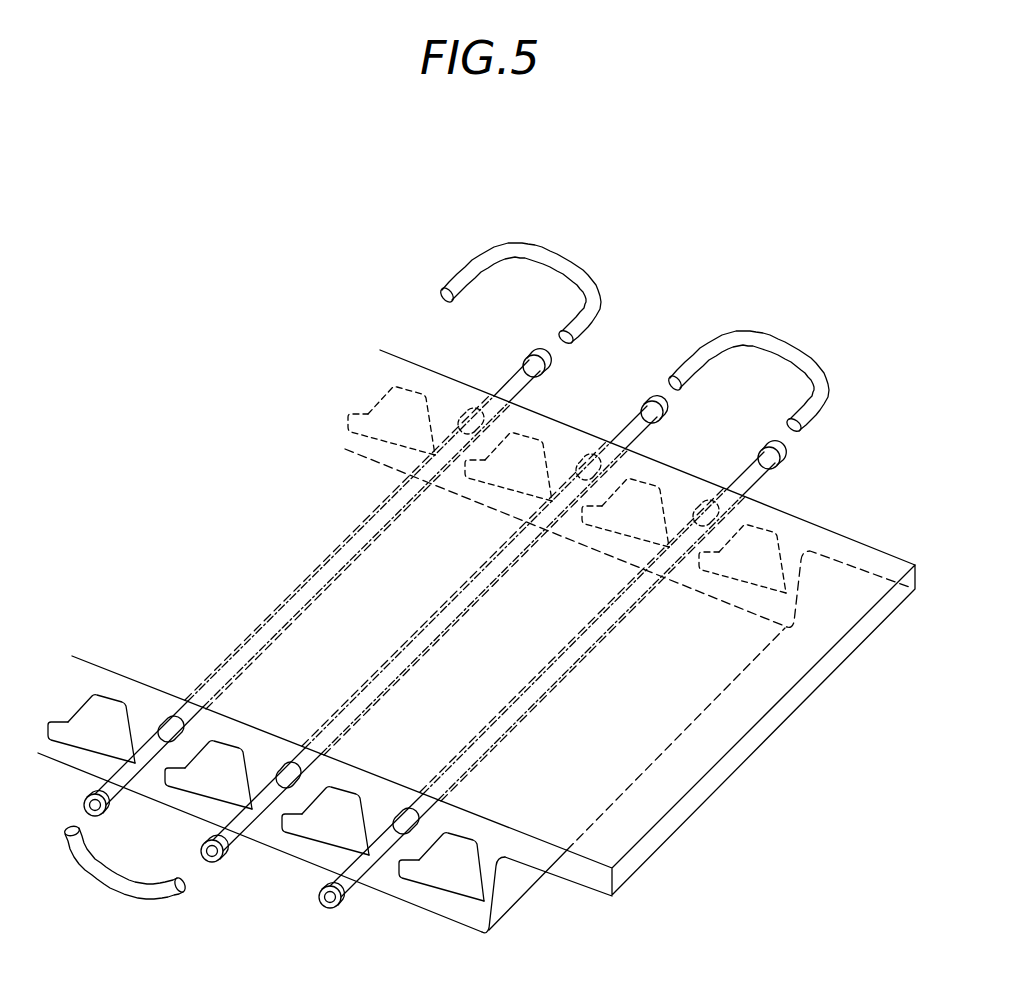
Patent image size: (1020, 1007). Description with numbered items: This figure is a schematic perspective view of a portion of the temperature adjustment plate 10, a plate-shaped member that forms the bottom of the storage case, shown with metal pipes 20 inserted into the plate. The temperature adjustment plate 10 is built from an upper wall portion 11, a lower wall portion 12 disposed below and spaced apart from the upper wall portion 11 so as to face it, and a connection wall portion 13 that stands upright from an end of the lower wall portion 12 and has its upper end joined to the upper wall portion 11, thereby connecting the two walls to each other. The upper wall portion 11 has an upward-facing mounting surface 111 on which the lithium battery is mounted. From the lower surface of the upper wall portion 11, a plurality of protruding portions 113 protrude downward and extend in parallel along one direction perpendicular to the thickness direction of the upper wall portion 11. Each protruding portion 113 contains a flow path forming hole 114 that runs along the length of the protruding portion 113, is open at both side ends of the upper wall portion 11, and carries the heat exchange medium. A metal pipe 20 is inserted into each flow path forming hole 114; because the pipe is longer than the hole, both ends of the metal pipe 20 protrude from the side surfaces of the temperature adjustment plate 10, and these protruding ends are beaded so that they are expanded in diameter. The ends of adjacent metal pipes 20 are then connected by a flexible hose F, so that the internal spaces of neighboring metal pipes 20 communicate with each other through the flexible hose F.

The temperature adjustment plate 10 is at (808, 501).
The upper wall portion 11 is at (493, 644).
The mounting surface 111 is at (837, 549).
The lower wall portion 12 is at (57, 757).
The connection wall portion 13 is at (522, 893).
The protruding portion 113 is at (185, 757).
The flow path forming hole 114 is at (170, 790).
The metal pipe 20 is at (128, 758).
The flexible hose F is at (604, 300).